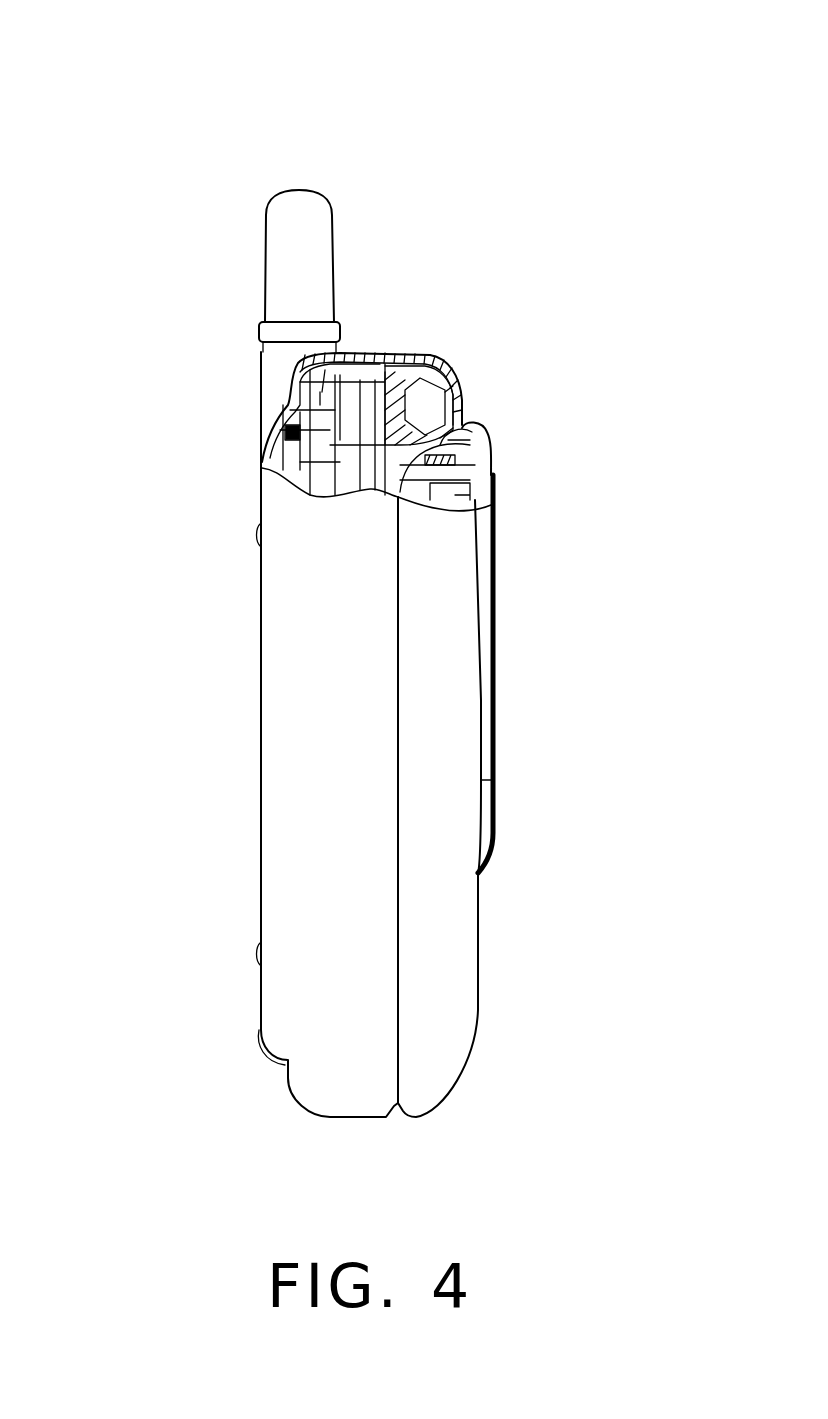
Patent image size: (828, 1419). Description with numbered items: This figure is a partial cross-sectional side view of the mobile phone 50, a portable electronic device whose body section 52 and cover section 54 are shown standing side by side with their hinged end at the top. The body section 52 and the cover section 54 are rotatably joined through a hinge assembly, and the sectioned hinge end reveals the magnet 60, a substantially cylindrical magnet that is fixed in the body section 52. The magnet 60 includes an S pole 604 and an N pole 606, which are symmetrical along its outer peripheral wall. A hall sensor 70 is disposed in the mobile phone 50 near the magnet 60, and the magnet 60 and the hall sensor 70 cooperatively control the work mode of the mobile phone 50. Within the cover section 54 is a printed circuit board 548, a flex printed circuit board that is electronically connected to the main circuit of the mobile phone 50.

The mobile phone 50 is at (392, 35).
The body section 52 is at (272, 1088).
The cover section 54 is at (478, 1088).
The magnet 60 is at (578, 315).
The S pole 604 is at (428, 405).
The N pole 606 is at (430, 365).
The hall sensor 70 is at (478, 437).
The printed circuit board 548 is at (468, 488).